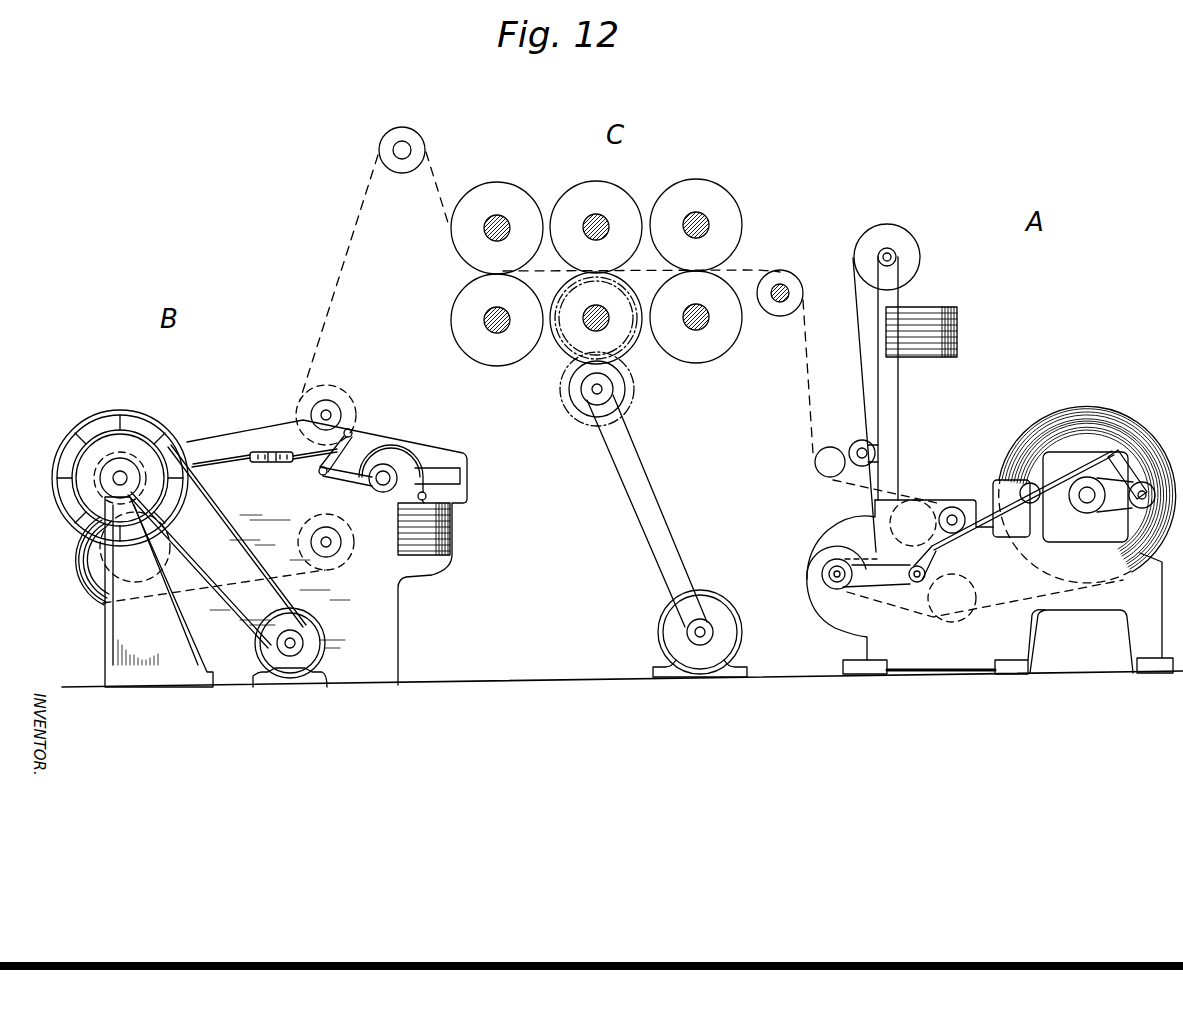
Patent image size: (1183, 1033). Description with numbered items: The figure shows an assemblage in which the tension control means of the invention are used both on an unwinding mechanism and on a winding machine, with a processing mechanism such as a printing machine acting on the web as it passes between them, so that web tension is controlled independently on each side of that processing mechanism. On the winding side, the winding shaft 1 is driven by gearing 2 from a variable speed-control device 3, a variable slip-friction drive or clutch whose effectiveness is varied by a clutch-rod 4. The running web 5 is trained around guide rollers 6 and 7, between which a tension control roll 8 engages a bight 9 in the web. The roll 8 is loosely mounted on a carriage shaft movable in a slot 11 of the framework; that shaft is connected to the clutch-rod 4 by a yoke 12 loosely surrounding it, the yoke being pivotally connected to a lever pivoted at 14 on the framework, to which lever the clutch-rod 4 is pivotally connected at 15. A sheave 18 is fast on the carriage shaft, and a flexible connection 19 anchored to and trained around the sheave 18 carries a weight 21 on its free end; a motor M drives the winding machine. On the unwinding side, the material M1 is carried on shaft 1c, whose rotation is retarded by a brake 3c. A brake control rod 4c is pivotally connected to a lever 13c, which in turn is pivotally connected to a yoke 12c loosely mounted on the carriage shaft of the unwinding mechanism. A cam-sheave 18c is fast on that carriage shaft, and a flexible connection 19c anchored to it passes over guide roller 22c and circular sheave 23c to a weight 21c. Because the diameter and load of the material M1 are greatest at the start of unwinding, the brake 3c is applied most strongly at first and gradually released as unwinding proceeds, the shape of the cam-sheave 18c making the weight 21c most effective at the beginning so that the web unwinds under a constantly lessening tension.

The winding shaft 1 is at (117, 480).
The gearing 2 is at (117, 600).
The variable speed-control device 3 is at (103, 413).
The clutch-rod 4 is at (213, 467).
The running web 5 is at (328, 312).
The guide roller 6 is at (923, 503).
The guide roller 7 is at (937, 617).
The tension control roll 8 is at (413, 452).
The bight 9 is at (386, 462).
The slot 11 is at (462, 470).
The yoke 12 is at (327, 480).
The pivot 14 is at (352, 432).
The pivotal connection 15 is at (333, 452).
The sheave 18 is at (420, 458).
The flexible connection 19 is at (445, 488).
The weight 21 is at (452, 535).
The motor M is at (80, 577).
The circular sheave 23c is at (900, 238).
The weight 21c is at (958, 318).
The flexible connection 19c is at (855, 396).
The guide roller 22c is at (860, 442).
The brake control rod 4c is at (992, 525).
The cam-sheave 18c is at (823, 550).
The yoke 12c is at (888, 581).
The lever 13c is at (947, 556).
The material M1 is at (1132, 401).
The brake 3c is at (1147, 478).
The shaft 1c is at (1087, 500).